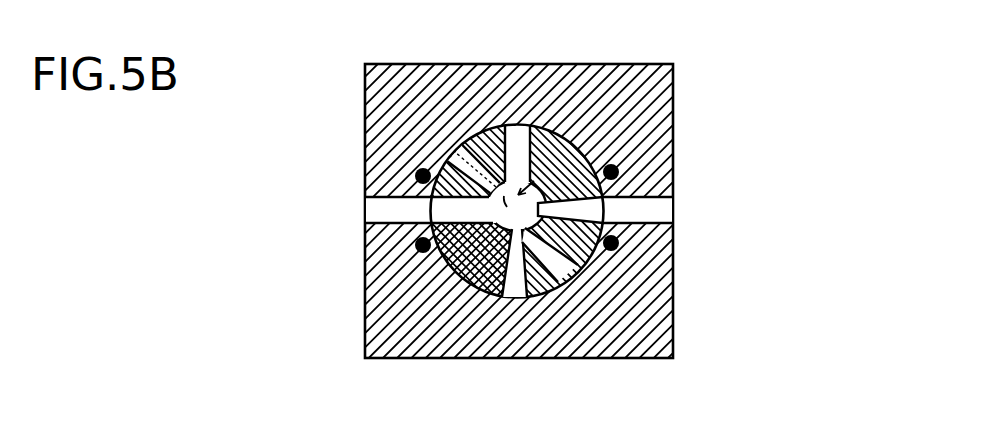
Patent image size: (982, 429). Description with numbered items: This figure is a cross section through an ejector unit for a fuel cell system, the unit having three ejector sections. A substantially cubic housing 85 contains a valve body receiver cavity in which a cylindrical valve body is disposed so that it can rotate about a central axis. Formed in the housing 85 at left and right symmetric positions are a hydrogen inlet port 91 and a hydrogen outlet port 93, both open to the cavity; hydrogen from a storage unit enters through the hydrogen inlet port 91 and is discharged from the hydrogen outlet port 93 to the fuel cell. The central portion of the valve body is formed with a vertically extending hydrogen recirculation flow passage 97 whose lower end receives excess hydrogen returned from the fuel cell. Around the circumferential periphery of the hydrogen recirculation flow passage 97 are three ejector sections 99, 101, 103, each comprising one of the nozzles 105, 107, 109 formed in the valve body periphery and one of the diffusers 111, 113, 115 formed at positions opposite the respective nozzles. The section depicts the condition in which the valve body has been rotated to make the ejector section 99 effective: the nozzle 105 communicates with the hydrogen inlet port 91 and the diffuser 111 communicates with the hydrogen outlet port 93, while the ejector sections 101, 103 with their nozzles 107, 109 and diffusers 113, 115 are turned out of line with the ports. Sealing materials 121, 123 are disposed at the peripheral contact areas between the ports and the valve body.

The housing 85 is at (668, 86).
The hydrogen inlet port 91 is at (665, 211).
The hydrogen outlet port 93 is at (365, 209).
The hydrogen recirculation flow passage 97 is at (475, 255).
The ejector section 99 is at (528, 178).
The ejector section 101 is at (540, 293).
The ejector section 103 is at (478, 263).
The nozzle 105 is at (616, 167).
The nozzle 107 is at (598, 258).
The nozzle 109 is at (490, 294).
The diffuser 111 is at (452, 253).
The diffuser 113 is at (420, 169).
The diffuser 115 is at (480, 127).
The sealing material 121 is at (618, 246).
The sealing material 123 is at (417, 247).